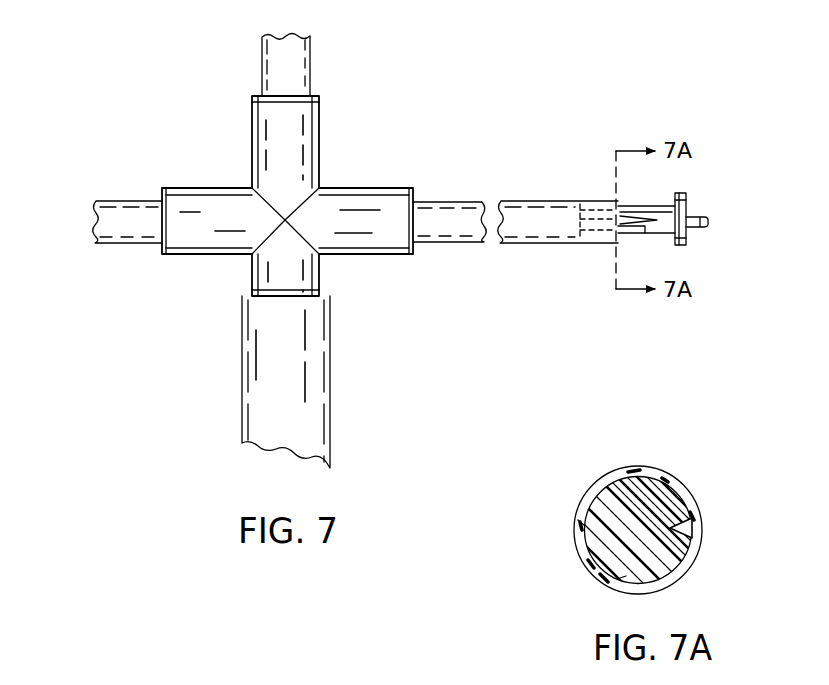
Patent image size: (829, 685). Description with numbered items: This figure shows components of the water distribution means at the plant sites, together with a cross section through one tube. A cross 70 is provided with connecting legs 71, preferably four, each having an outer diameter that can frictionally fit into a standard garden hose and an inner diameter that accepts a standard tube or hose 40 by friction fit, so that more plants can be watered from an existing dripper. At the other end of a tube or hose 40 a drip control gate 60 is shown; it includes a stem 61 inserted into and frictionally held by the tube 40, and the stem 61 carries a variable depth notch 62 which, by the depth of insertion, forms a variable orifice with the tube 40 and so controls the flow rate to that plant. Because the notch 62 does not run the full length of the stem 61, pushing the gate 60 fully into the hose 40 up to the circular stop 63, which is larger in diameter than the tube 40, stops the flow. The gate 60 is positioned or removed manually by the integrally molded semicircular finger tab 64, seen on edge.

In FIG. 7, the tube or hose 40 is at (285, 61).
In FIG. 7A, the tube or hose 40 is at (648, 470).
In FIG. 7, the drip control gate 60 is at (676, 220).
In FIG. 7, the stem 61 is at (655, 238).
In FIG. 7A, the stem 61 is at (662, 503).
In FIG. 7, the variable depth notch 62 is at (645, 237).
In FIG. 7A, the variable depth notch 62 is at (692, 529).
In FIG. 7, the circular stop 63 is at (690, 205).
In FIG. 7, the semicircular finger tab 64 is at (706, 225).
In FIG. 7, the cross 70 is at (290, 202).
In FIG. 7, the connecting leg 71 is at (275, 150).